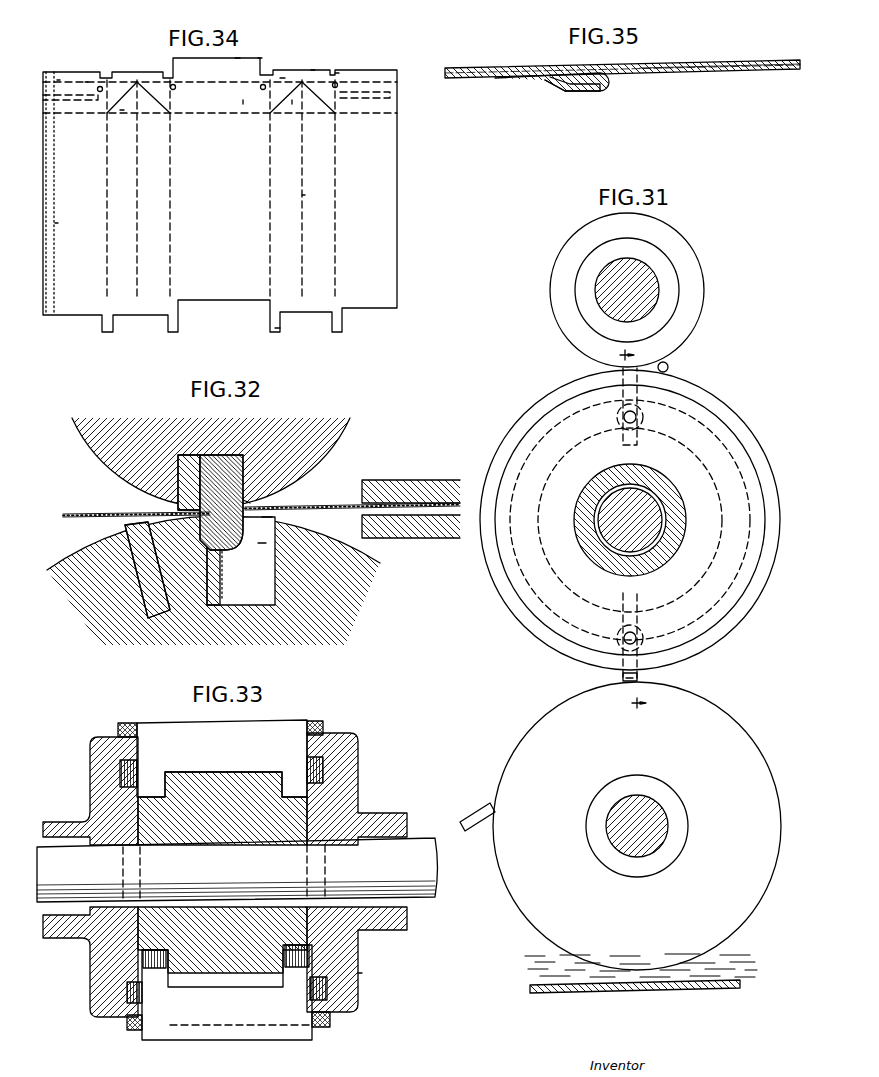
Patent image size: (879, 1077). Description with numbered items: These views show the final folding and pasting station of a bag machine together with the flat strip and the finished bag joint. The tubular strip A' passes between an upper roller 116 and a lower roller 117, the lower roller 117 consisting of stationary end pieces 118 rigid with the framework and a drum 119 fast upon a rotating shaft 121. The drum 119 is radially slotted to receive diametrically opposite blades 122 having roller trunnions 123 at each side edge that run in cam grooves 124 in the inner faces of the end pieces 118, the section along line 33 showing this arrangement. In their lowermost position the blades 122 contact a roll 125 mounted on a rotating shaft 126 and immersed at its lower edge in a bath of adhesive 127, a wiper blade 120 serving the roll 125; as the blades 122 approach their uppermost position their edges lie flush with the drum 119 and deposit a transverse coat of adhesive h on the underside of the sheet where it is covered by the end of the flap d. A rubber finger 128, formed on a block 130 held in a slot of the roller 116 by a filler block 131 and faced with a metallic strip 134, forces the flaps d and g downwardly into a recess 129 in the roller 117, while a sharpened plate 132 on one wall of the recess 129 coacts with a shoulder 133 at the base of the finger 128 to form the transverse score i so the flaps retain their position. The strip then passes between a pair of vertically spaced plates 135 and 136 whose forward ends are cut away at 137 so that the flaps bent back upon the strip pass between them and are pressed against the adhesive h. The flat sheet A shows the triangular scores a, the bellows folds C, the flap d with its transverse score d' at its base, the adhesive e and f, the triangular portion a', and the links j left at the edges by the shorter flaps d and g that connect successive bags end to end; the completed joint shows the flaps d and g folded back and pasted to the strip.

In FIG. 34, the strip or sheet A is at (220, 195).
In FIG. 34, the triangular creases or scores a is at (368, 42).
In FIG. 34, the triangular portion a' is at (290, 121).
In FIG. 34, the bellows folds C is at (305, 197).
In FIG. 34, the flap d is at (275, 44).
In FIG. 35, the flap d is at (552, 93).
In FIG. 32, the flap d is at (249, 573).
In FIG. 34, the transverse score d' is at (226, 68).
In FIG. 34, the adhesive e is at (57, 225).
In FIG. 34, the adhesive f is at (120, 82).
In FIG. 34, the flap g is at (313, 70).
In FIG. 35, the flap g is at (572, 88).
In FIG. 34, the adhesive h is at (85, 82).
In FIG. 32, the adhesive h is at (252, 552).
In FIG. 34, the transverse score i is at (60, 80).
In FIG. 34, the links j is at (270, 328).
In FIG. 35, the links j is at (670, 70).
In FIG. 35, the tubular strip A' is at (622, 54).
In FIG. 32, the tubular strip A' is at (452, 458).
In FIG. 31, the line 33— 33 is at (644, 533).
In FIG. 31, the roller 116 is at (700, 288).
In FIG. 32, the roller 116 is at (350, 431).
In FIG. 31, the roller 117 is at (725, 399).
In FIG. 32, the roller 117 is at (360, 578).
In FIG. 33, the end pieces 118 is at (345, 778).
In FIG. 33, the drum 119 is at (323, 730).
In FIG. 31, the wiper blade 120 is at (472, 808).
In FIG. 31, the rotating shaft 121 is at (656, 520).
In FIG. 33, the rotating shaft 121 is at (413, 850).
In FIG. 31, the blades 122 is at (641, 678).
In FIG. 32, the blades 122 is at (130, 517).
In FIG. 33, the blades 122 is at (263, 725).
In FIG. 31, the roller trunnions 123 is at (650, 625).
In FIG. 33, the roller trunnions 123 is at (357, 745).
In FIG. 33, the cam grooves 124 is at (358, 973).
In FIG. 31, the roll 125 is at (715, 719).
In FIG. 31, the rotating shaft 126 is at (668, 812).
In FIG. 31, the bath of adhesive 127 is at (727, 958).
In FIG. 32, the finger 128 is at (270, 517).
In FIG. 32, the recess 129 is at (263, 543).
In FIG. 31, the block 130 is at (670, 366).
In FIG. 32, the block 130 is at (230, 453).
In FIG. 32, the filler block 131 is at (178, 470).
In FIG. 32, the plate 132 is at (228, 595).
In FIG. 32, the shoulder 133 is at (247, 477).
In FIG. 32, the metallic strip 134 is at (250, 503).
In FIG. 32, the plate 135 is at (395, 481).
In FIG. 32, the plate 136 is at (405, 533).
In FIG. 32, the cut-away portion 137 is at (355, 504).